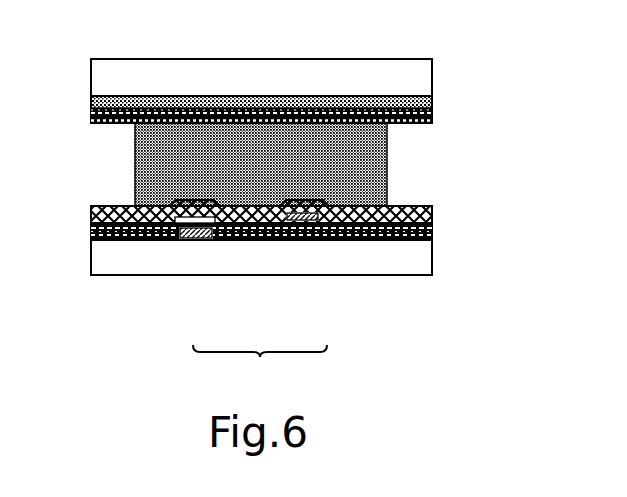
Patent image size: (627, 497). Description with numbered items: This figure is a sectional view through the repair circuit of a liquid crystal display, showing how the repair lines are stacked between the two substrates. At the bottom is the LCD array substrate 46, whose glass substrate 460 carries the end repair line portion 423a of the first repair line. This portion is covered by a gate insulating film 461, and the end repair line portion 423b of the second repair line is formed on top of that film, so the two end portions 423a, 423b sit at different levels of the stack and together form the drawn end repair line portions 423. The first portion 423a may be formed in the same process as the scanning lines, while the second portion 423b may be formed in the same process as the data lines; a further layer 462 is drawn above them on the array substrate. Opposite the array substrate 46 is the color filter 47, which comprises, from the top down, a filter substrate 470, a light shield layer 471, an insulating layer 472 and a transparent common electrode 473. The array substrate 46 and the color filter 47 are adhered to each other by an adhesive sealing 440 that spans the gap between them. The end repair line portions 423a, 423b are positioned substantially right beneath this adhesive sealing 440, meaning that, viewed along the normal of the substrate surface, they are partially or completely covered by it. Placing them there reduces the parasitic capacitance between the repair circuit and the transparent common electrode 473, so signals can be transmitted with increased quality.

The color filter 47 is at (77, 100).
The filter substrate 470 is at (391, 77).
The light shield layer 471 is at (432, 100).
The insulating layer 472 is at (433, 110).
The transparent common electrode 473 is at (432, 122).
The adhesive sealing 440 is at (387, 160).
The LCD array substrate 46 is at (72, 262).
The lower alignment/insulating layer 462 is at (432, 215).
The gate insulating film 461 is at (432, 243).
The glass substrate 460 is at (407, 262).
The electrode pair 423 is at (260, 369).
The end repair line portion of the first repair line 423a is at (197, 240).
The end repair line portion of the second repair line 423b is at (295, 223).